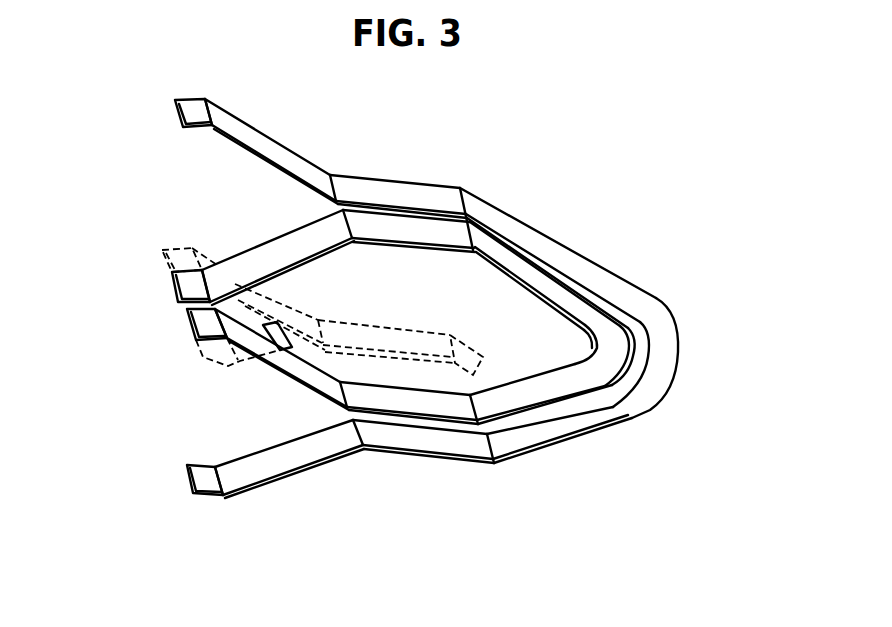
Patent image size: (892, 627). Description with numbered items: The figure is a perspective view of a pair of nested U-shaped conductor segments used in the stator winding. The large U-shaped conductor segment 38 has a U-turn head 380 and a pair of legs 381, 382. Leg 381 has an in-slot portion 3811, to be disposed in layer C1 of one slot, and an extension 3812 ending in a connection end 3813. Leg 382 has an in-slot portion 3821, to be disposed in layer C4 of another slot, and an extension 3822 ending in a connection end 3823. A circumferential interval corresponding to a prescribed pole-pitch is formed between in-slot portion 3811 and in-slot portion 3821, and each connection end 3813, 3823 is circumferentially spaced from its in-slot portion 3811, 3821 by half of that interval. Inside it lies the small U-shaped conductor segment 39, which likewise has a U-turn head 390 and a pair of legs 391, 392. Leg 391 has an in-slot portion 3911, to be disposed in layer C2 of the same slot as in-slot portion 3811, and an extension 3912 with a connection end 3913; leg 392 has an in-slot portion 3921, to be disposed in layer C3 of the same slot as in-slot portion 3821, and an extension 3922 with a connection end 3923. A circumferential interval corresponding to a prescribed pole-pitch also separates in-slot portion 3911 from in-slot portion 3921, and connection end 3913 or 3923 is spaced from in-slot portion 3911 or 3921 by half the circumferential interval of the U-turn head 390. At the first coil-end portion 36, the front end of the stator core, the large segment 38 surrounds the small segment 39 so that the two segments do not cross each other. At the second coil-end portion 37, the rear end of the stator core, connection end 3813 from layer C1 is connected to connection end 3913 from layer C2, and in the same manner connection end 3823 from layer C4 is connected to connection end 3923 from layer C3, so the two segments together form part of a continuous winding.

The first coil-end portion 36 is at (415, 326).
The second coil-end portion 37 is at (241, 508).
The large U-shaped conductor segment 38 is at (458, 323).
The U-turn head 380 is at (665, 365).
The leg 381 is at (398, 498).
The in-slot portion 3811 is at (406, 440).
The extension 3812 is at (289, 505).
The connection end 3813 is at (205, 488).
The leg 382 is at (415, 192).
The in-slot portion 3821 is at (405, 188).
The extension 3822 is at (302, 164).
The connection end 3823 is at (192, 110).
The small U-shaped conductor segment 39 is at (415, 359).
The U-turn head 390 is at (618, 342).
The leg 391 is at (352, 453).
The in-slot portion 3911 is at (436, 408).
The extension 3912 is at (268, 356).
The connection end 3913 is at (188, 318).
The leg 392 is at (349, 234).
The in-slot portion 3921 is at (445, 232).
The extension 3922 is at (265, 258).
The connection end 3923 is at (172, 283).